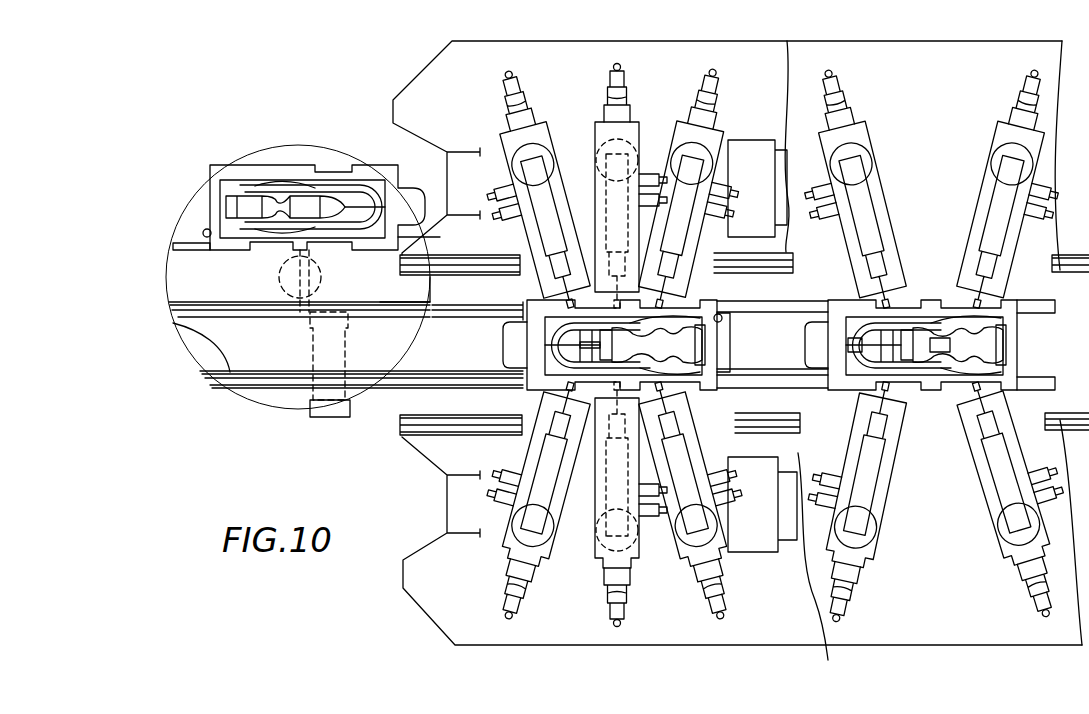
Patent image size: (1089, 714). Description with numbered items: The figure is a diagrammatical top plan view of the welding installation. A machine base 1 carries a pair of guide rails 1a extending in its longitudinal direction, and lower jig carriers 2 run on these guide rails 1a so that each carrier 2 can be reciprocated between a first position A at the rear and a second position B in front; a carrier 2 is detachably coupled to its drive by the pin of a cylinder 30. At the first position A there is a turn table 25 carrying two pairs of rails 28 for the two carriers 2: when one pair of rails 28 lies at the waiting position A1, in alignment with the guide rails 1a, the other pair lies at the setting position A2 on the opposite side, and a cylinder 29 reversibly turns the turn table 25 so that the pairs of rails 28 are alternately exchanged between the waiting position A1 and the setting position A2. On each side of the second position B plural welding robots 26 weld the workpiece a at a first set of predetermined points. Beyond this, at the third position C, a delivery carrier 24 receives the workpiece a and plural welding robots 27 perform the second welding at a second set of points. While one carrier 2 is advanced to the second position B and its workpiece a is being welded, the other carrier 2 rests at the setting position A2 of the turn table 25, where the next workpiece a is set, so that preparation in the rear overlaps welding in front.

The machine base 1 is at (440, 422).
The guide rails 1a is at (478, 378).
The lower jig carrier 2 is at (217, 177).
The delivery carrier 24 is at (940, 380).
The turn table 25 is at (180, 270).
The welding robots 26 is at (610, 193).
The welding robots 27 is at (988, 212).
The rails 28 is at (190, 240).
The cylinder 29 is at (340, 417).
The cylinder 30 is at (205, 231).
The workpiece a is at (690, 363).
The first position A is at (324, 136).
The waiting position A1 is at (277, 397).
The setting position A2 is at (290, 157).
The second position B is at (531, 291).
The third position C is at (932, 294).